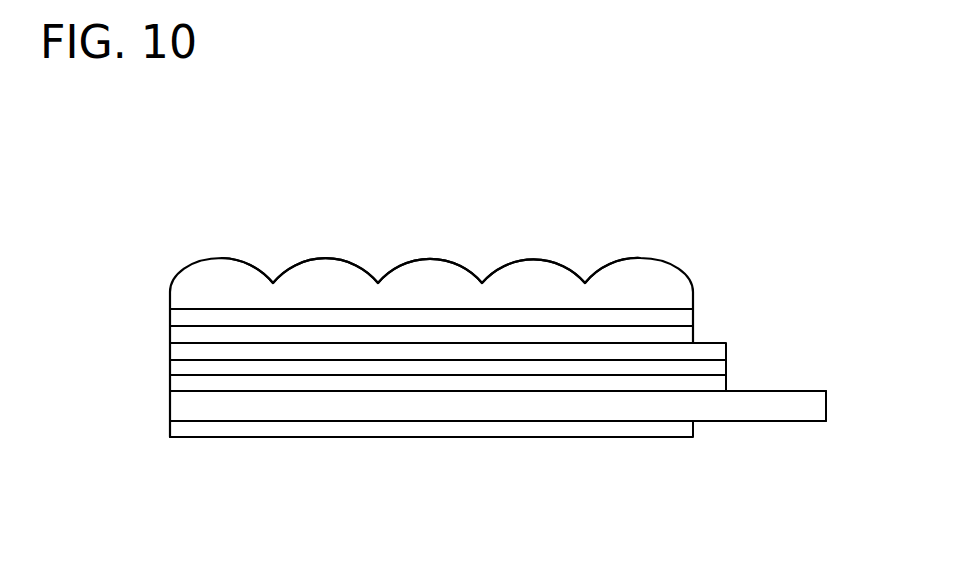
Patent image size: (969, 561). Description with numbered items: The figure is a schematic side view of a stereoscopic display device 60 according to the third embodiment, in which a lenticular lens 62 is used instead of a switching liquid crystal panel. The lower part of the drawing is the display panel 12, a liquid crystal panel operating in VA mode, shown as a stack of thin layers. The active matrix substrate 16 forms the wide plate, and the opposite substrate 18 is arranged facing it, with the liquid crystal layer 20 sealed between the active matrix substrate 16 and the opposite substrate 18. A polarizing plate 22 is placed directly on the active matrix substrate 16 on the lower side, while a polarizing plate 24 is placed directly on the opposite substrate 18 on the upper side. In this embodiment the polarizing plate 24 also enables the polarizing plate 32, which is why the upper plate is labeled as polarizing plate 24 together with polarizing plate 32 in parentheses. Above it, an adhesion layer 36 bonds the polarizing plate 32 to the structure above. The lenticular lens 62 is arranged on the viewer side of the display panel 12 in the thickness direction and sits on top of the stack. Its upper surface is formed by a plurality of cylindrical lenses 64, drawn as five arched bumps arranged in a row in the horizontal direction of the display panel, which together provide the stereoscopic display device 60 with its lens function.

The display panel 12 is at (832, 432).
The active matrix substrate 16 is at (190, 408).
The opposite substrate 18 is at (190, 355).
The liquid crystal layer 20 is at (190, 382).
The polarizing plate 22 is at (541, 430).
The polarizing plate 24 is at (496, 366).
The polarizing plate 32 is at (697, 342).
The adhesion layer 36 is at (693, 320).
The stereoscopic display device 60 is at (170, 257).
The lenticular lens 62 is at (686, 262).
The cylindrical lenses 64 is at (220, 272).